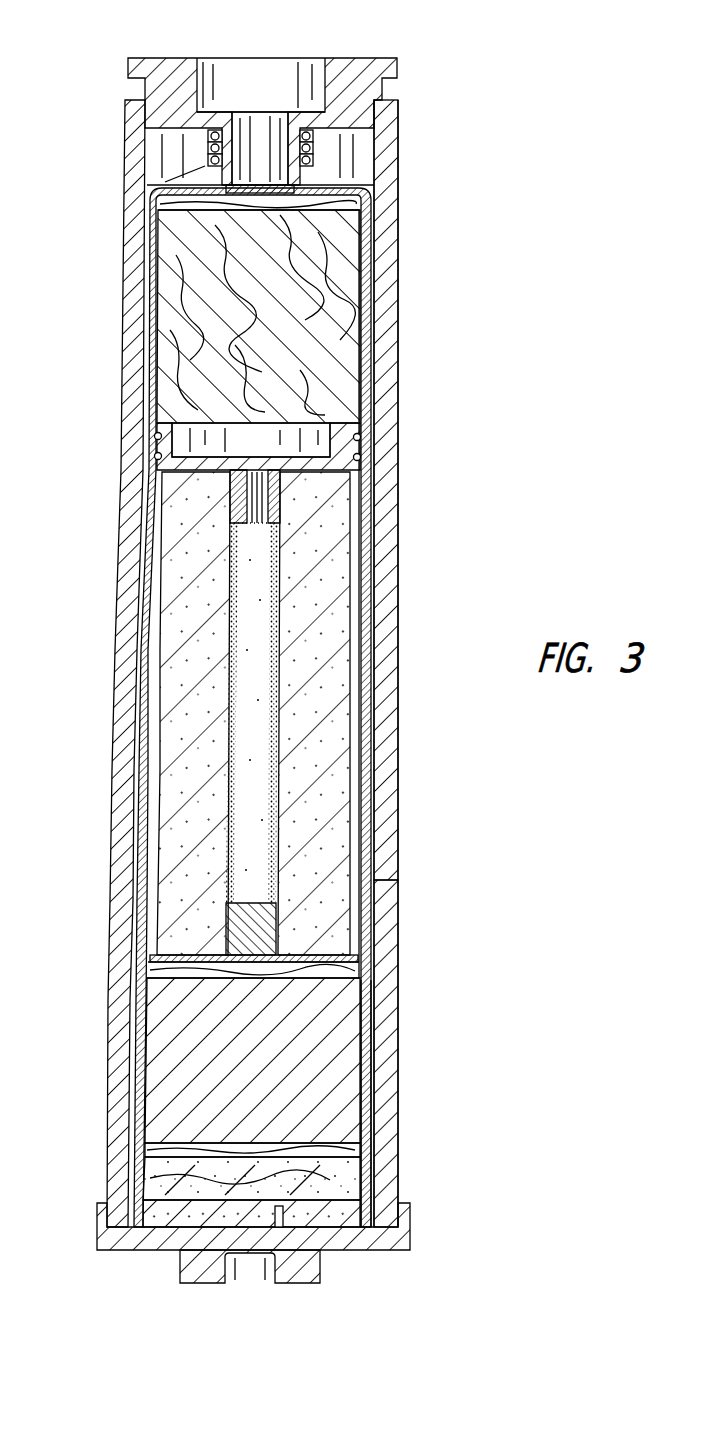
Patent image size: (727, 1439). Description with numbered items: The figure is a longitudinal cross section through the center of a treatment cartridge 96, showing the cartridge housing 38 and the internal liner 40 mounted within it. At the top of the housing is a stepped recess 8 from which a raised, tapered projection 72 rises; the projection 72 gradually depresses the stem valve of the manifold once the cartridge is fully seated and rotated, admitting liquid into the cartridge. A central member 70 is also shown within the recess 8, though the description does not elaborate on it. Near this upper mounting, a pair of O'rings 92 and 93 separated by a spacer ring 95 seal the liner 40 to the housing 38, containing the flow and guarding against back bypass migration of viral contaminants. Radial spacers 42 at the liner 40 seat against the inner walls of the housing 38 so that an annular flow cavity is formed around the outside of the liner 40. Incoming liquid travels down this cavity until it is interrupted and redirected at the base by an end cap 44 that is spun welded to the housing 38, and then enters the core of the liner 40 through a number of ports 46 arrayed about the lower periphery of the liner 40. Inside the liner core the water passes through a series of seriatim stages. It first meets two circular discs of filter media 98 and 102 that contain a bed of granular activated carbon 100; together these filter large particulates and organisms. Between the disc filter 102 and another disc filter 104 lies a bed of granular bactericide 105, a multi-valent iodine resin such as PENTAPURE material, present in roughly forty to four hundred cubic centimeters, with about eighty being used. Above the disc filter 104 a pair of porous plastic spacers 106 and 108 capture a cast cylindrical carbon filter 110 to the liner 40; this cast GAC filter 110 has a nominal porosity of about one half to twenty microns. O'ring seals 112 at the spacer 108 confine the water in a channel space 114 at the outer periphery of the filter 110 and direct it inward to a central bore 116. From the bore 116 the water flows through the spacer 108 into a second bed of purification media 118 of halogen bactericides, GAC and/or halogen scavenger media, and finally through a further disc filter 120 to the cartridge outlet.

The recess 8 is at (284, 54).
The raised tapered projection 72 is at (243, 112).
The O'ring 93 is at (212, 131).
The spacer ring 95 is at (212, 144).
The O'ring 92 is at (212, 159).
The valve member 70 is at (270, 152).
The disc filter 120 is at (152, 210).
The second bed of purification media 118 is at (340, 312).
The porous plastic spacer 108 is at (345, 428).
The cartridge 96 is at (296, 663).
The O'ring seals 112 is at (154, 456).
The bore 116 is at (228, 585).
The cast cylindrical carbon filter 110 is at (338, 608).
The channel space 114 is at (150, 800).
The porous plastic spacer 106 is at (352, 945).
The disc filter 104 is at (365, 967).
The bed of granular bactericide 105 is at (345, 1020).
The cartridge housing 38 is at (398, 1055).
The internal liner 40 is at (367, 1118).
The disc filter media 102 is at (357, 1150).
The bed of granular activated carbon 100 is at (343, 1200).
The disc filter media 98 is at (300, 1229).
The ports 46 is at (283, 1230).
The end cap 44 is at (215, 1283).
The radial spacers 42 is at (130, 1178).